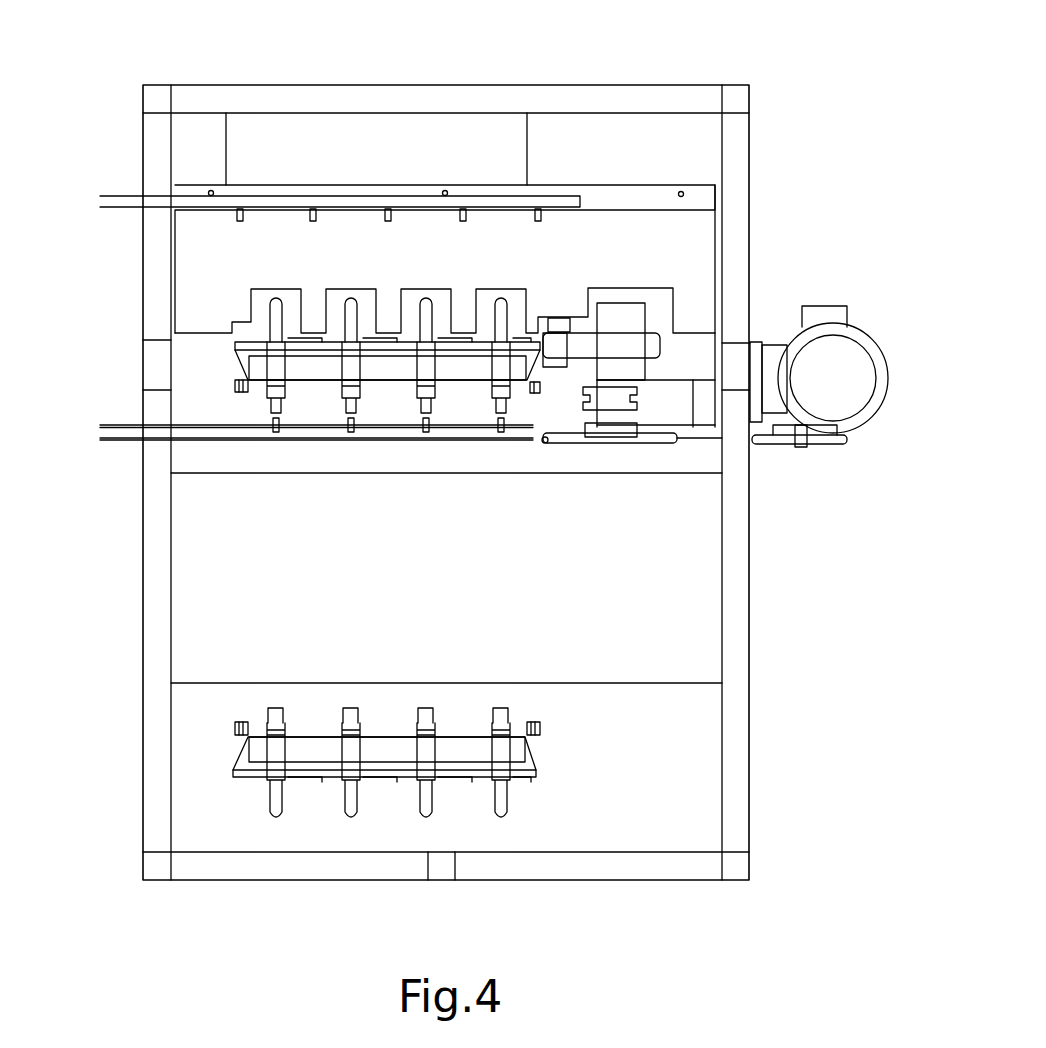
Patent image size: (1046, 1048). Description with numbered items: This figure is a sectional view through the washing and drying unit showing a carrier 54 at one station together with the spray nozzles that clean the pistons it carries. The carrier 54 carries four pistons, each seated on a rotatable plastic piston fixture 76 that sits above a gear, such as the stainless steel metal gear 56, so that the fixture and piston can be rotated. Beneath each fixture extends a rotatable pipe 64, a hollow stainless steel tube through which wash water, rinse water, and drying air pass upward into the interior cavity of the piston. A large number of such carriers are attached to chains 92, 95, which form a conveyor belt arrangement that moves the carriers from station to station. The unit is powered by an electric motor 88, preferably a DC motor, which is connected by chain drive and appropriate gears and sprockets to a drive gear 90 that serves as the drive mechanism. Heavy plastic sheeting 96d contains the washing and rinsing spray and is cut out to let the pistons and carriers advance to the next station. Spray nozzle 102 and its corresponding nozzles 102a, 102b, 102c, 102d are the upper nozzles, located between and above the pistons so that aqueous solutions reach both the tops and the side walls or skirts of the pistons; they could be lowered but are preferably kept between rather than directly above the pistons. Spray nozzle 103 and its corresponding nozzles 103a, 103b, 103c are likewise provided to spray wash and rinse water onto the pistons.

The spray nozzle 102 is at (240, 208).
The spray nozzle 102a is at (313, 208).
The spray nozzle 102b is at (389, 208).
The spray nozzle 102c is at (464, 208).
The spray nozzle 102d is at (537, 208).
The heavy plastic sheeting 96d is at (692, 235).
The metal gear 56 is at (520, 333).
The piston fixture 76 is at (275, 313).
The carrier 54 is at (235, 352).
The chain 92 is at (233, 388).
The rotatable pipe 64 is at (268, 403).
The spray nozzle 103 is at (276, 433).
The spray nozzle 103a is at (351, 433).
The spray nozzle 103b is at (426, 433).
The spray nozzle 103c is at (501, 433).
The chain 95 is at (545, 443).
The drive gear 90 is at (545, 345).
The electric motor 88 is at (880, 403).